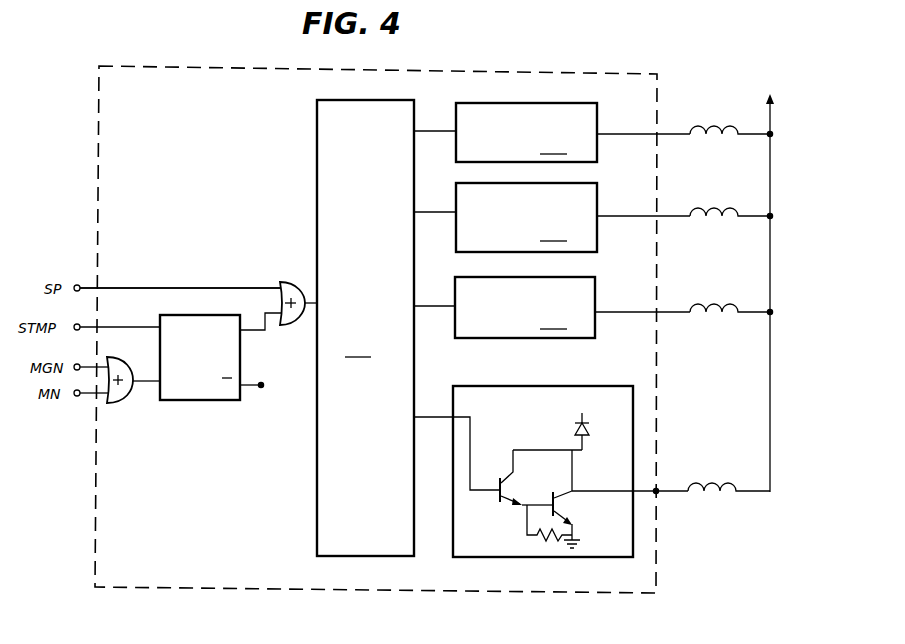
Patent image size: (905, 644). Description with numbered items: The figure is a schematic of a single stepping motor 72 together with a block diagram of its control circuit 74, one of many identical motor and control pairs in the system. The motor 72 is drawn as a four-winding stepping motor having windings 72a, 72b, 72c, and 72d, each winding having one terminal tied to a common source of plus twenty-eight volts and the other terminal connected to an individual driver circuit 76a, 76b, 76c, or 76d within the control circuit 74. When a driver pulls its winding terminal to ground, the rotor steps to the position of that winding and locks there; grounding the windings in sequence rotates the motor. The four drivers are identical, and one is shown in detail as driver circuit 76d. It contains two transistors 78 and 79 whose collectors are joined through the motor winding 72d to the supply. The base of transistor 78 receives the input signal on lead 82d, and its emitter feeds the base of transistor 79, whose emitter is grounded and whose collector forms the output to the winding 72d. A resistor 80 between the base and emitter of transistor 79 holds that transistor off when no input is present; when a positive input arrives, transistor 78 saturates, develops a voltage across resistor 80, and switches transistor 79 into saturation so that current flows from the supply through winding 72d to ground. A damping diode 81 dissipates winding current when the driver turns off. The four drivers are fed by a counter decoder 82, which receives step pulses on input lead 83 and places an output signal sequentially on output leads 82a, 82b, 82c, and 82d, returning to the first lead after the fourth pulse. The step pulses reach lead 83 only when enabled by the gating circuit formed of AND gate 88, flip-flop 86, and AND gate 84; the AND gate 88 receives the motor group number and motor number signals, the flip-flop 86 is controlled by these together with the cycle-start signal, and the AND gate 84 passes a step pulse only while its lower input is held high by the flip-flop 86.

The stepping motor 72 is at (712, 90).
The motor winding 72a is at (715, 125).
The motor winding 72b is at (720, 208).
The motor winding 72c is at (714, 306).
The motor winding 72d is at (712, 486).
The control circuit 74 is at (166, 62).
The driver circuit 76a is at (573, 132).
The driver circuit 76b is at (573, 217).
The driver circuit 76c is at (572, 307).
The driver circuit 76d is at (570, 462).
The transistor 78 is at (510, 499).
The transistor 79 is at (566, 497).
The resistor 80 is at (545, 538).
The damping diode 81 is at (588, 430).
The counter decoder 82 is at (365, 328).
The output lead 82a is at (437, 129).
The output lead 82b is at (437, 210).
The output lead 82c is at (432, 304).
The output lead 82d is at (433, 414).
The input lead 83 is at (311, 298).
The AND gate 84 is at (281, 284).
The flip-flop 86 is at (200, 400).
The AND gate 88 is at (117, 404).